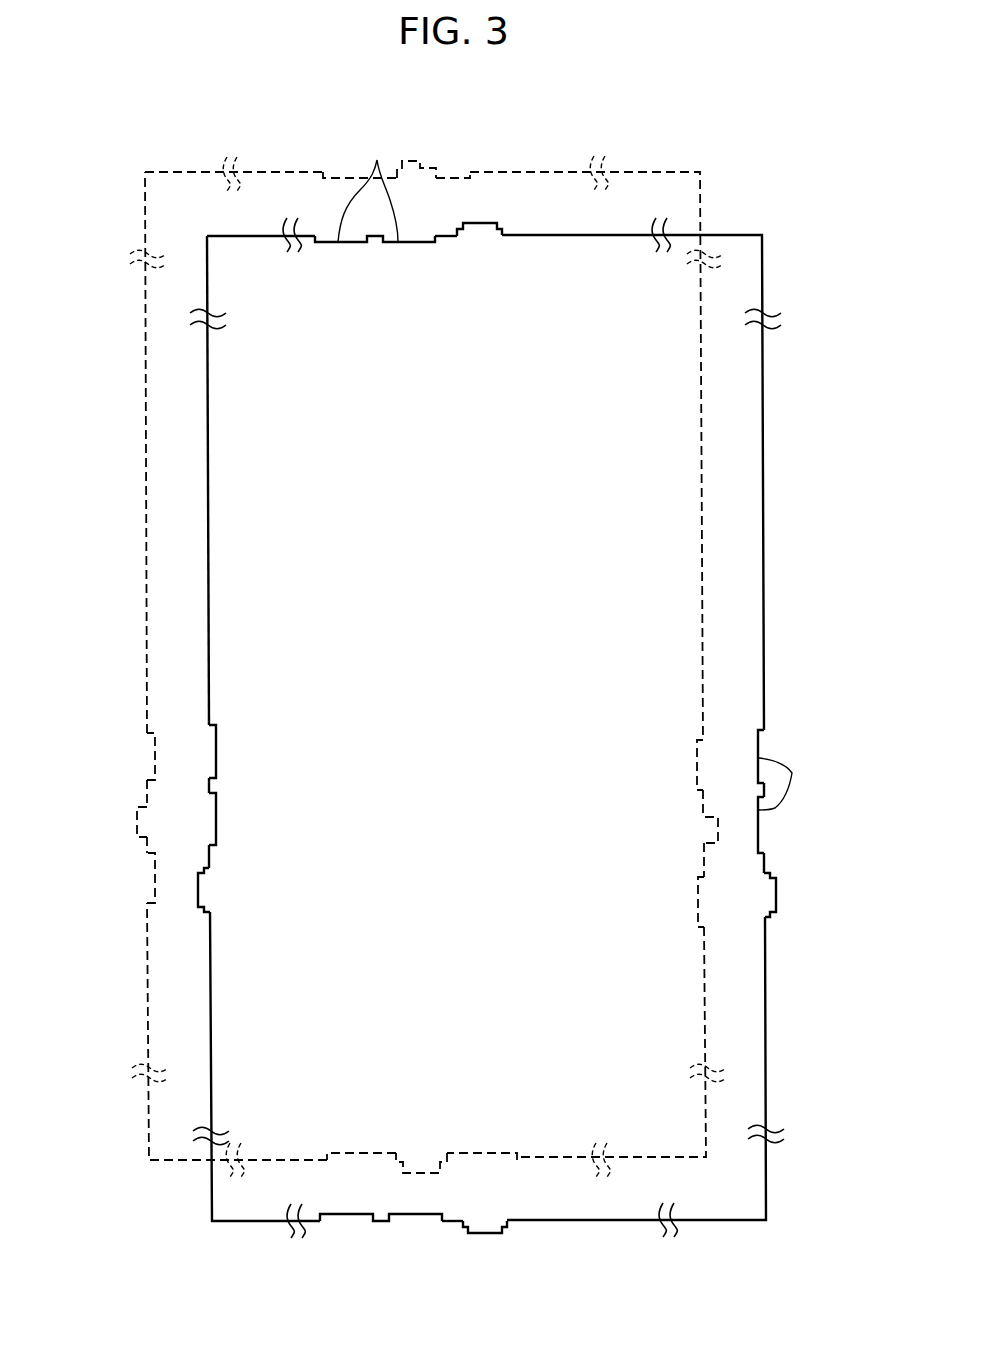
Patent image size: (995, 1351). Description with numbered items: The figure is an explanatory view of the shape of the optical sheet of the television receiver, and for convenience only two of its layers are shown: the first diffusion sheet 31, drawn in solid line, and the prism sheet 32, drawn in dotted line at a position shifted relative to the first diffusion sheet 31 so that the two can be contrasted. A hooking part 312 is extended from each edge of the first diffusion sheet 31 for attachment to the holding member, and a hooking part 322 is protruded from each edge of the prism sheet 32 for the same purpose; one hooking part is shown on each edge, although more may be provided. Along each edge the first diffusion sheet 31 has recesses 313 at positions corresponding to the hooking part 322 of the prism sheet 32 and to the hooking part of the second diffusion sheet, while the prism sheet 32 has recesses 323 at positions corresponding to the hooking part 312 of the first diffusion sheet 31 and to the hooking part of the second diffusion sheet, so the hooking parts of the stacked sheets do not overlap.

The first diffusion sheet 31 is at (738, 224).
The prism sheet 32 is at (634, 161).
The hooking part 312 is at (479, 223).
The recess 313 is at (377, 160).
The hooking part 322 is at (421, 161).
The recess 323 is at (342, 178).